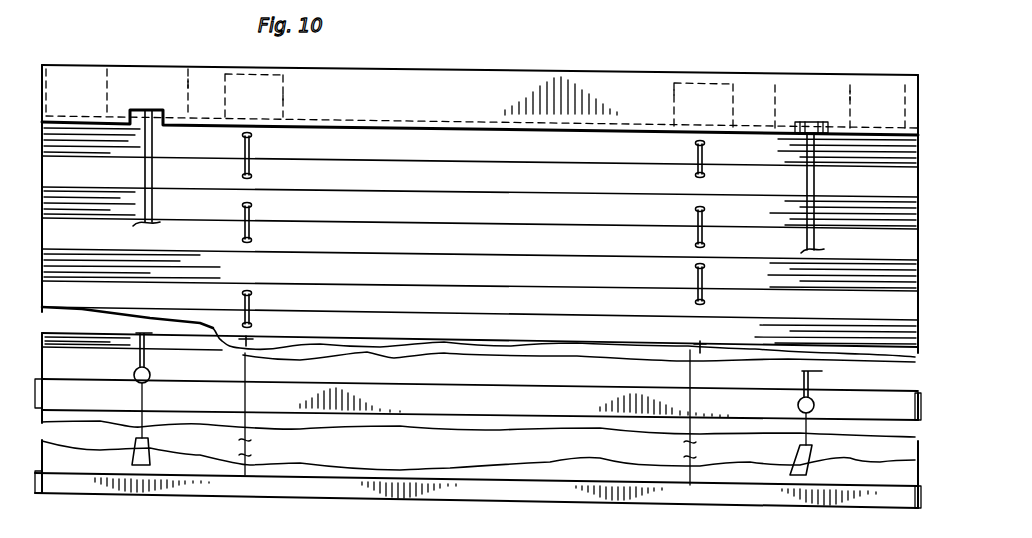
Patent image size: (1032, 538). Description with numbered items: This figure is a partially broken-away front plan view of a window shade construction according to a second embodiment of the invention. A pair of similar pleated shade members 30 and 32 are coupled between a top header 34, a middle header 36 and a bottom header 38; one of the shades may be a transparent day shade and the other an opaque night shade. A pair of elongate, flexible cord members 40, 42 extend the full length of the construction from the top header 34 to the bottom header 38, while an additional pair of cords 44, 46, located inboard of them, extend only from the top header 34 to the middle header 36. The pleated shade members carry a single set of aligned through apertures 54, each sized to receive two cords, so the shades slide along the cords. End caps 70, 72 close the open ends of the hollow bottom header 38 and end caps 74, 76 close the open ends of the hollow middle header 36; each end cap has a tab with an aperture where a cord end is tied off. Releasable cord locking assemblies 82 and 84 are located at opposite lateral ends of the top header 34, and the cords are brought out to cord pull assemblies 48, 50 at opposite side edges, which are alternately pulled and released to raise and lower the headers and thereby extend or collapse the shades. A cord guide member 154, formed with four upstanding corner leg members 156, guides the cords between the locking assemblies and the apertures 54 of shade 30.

The pleated shade member 30 is at (472, 217).
The pleated shade member 32 is at (538, 430).
The top header 34 is at (490, 92).
The middle header 36 is at (475, 412).
The bottom header 38 is at (447, 500).
The cord member 40 is at (822, 178).
The cord member 42 is at (800, 178).
The cord 44 is at (154, 170).
The cord 46 is at (144, 170).
The cord pull assembly 48 is at (162, 392).
The cord pull assembly 50 is at (828, 412).
The through apertures 54 is at (256, 174).
The end cap 70 is at (40, 496).
The end cap 72 is at (916, 510).
The end cap 74 is at (40, 377).
The end cap 76 is at (930, 377).
The releasable cord locking assembly 82 is at (190, 86).
The releasable cord locking assembly 84 is at (850, 100).
The cord guide member 154 is at (285, 99).
The corner leg members 156 is at (670, 92).